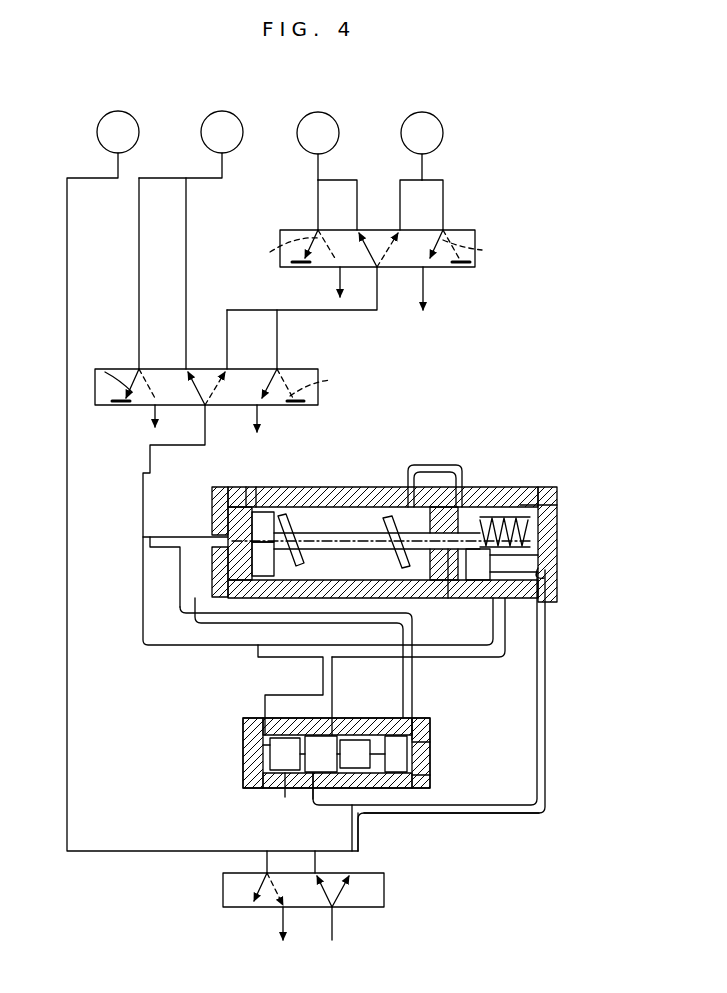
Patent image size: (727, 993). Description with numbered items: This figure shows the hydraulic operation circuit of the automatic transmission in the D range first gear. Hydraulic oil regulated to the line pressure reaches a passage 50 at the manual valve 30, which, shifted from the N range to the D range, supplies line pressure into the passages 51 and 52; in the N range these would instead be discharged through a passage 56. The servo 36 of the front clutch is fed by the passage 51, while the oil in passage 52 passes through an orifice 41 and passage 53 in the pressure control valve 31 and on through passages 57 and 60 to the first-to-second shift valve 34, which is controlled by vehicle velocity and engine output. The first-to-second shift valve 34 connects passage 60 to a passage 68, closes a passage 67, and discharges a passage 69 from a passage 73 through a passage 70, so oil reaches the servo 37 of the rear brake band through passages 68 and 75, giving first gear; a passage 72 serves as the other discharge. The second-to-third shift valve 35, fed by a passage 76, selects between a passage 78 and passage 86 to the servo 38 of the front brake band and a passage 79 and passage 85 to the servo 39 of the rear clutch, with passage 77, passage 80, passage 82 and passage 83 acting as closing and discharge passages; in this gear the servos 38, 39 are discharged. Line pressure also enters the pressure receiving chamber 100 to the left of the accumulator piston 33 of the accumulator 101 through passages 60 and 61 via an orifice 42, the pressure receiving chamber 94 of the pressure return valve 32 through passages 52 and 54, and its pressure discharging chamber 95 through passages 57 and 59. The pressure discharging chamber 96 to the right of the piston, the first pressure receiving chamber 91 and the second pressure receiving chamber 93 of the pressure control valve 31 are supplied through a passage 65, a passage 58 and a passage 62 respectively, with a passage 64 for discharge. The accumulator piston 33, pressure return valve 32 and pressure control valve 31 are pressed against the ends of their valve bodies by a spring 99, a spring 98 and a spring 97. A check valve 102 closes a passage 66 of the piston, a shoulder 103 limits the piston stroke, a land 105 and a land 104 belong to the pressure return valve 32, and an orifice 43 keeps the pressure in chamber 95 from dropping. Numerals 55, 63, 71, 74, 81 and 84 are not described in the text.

The manual valve 30 is at (384, 890).
The pressure control valve 31 is at (312, 740).
The pressure return valve 32 is at (462, 576).
The accumulator piston 33 is at (262, 512).
The 1-2 shift valve 34 is at (318, 400).
The 2-3 shift valve 35 is at (475, 267).
The servo of the front clutch 36 is at (137, 120).
The servo of the rear brake band 37 is at (241, 120).
The servo of the front brake band 38 is at (337, 121).
The servo of the rear clutch 39 is at (441, 121).
The orifice 41 is at (302, 807).
The orifice 42 is at (180, 567).
The orifice 43 is at (448, 465).
The passage 50 is at (334, 918).
The passage 51 is at (158, 845).
The passage 52 is at (360, 822).
The passage 53 is at (350, 814).
The passage 54 is at (482, 815).
The line 55 is at (318, 860).
The passage 56 is at (282, 912).
The passage 57 is at (332, 675).
The passage 58 is at (296, 694).
The passage 59 is at (448, 660).
The passage 60 is at (200, 650).
The passage 61 is at (200, 537).
The passage 62 is at (272, 620).
The drain port 63 is at (285, 798).
The passage 64 is at (448, 604).
The passage 65 is at (462, 478).
The passage 66 is at (244, 505).
The passage 67 is at (139, 328).
The passage 68 is at (186, 334).
The passage 69 is at (227, 352).
The passage 70 is at (277, 334).
The valve position 71 is at (107, 367).
The passage 72 is at (153, 418).
The passage 73 is at (259, 420).
The valve position 74 is at (323, 380).
The passage 75 is at (196, 181).
The passage 76 is at (377, 312).
The passage 77 is at (318, 208).
The passage 78 is at (358, 200).
The passage 79 is at (400, 198).
The passage 80 is at (443, 208).
The valve position 81 is at (278, 250).
The passage 82 is at (338, 280).
The passage 83 is at (425, 292).
The valve position 84 is at (478, 251).
The passage 85 is at (424, 171).
The passage 86 is at (318, 174).
The first pressure receiving chamber 91 is at (262, 745).
The second pressure receiving chamber 93 is at (430, 742).
The pressure receiving chamber 94 is at (557, 547).
The pressure discharging chamber 95 is at (500, 514).
The pressure discharging chamber 96 is at (348, 508).
The spring 97 is at (430, 775).
The spring 98 is at (557, 505).
The spring 99 is at (296, 560).
The pressure receiving chamber 100 is at (192, 616).
The accumulator 101 is at (312, 490).
The check valve 102 is at (230, 520).
The shoulder 103 is at (392, 508).
The land 104 is at (545, 578).
The land 105 is at (395, 548).